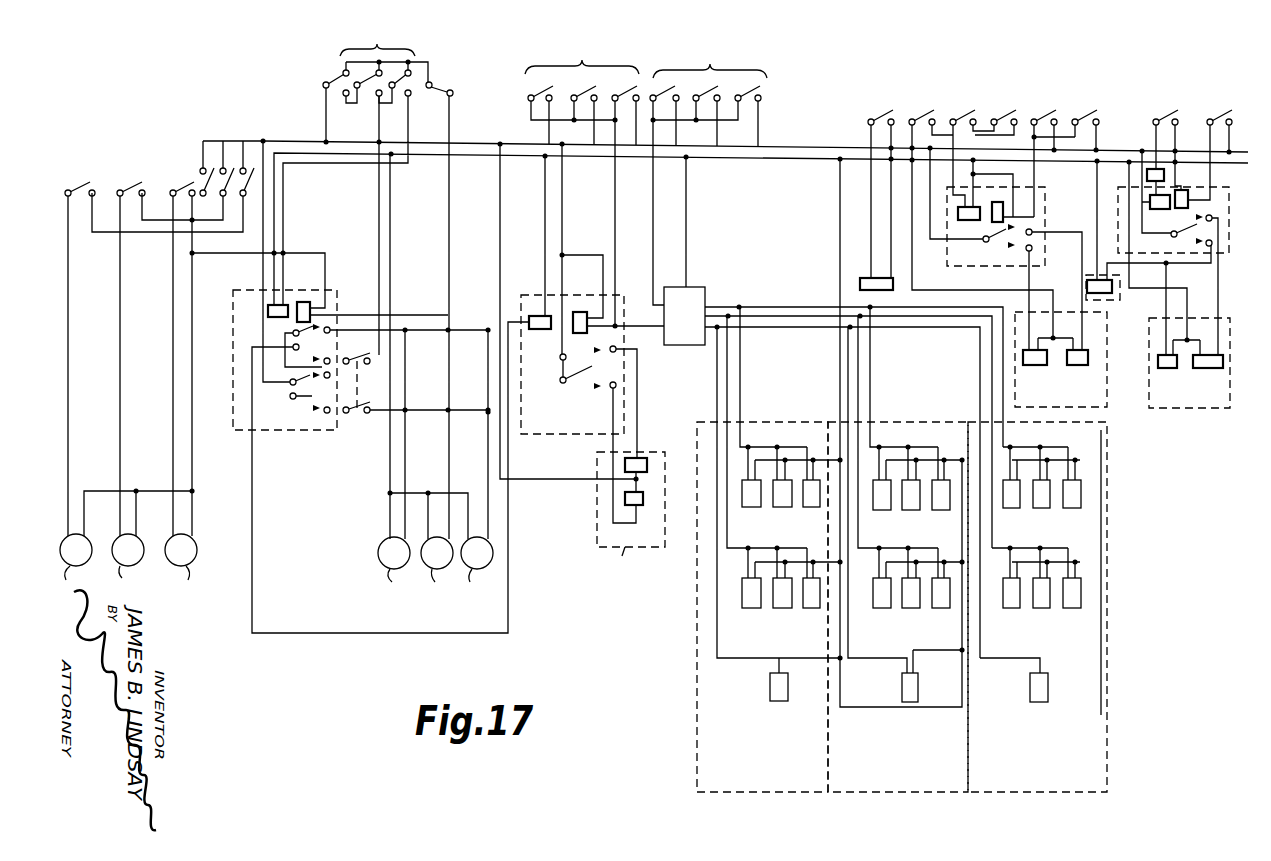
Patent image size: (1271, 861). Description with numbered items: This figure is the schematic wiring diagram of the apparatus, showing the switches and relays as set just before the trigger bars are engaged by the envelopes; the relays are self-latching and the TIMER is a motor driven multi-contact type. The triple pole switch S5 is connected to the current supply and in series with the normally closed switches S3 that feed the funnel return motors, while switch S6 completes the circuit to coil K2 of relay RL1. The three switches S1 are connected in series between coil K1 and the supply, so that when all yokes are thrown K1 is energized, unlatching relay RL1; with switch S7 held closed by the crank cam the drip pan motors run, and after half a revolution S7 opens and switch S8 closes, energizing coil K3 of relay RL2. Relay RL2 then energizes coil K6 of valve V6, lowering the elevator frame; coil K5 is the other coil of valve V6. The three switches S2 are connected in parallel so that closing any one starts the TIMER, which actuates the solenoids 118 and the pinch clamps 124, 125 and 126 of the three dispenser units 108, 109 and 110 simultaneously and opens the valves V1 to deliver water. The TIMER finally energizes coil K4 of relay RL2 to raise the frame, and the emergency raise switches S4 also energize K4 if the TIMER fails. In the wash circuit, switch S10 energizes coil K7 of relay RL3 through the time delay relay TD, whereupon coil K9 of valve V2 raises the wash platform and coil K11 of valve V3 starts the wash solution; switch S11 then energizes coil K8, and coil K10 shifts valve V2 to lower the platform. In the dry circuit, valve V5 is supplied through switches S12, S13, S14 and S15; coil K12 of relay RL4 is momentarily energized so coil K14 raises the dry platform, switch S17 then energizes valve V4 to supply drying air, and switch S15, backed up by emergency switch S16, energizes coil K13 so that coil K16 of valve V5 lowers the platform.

The dispenser unit 108 is at (768, 549).
The dispenser unit 109 is at (898, 549).
The dispenser unit 110 is at (1037, 607).
The solenoids 118 is at (751, 507).
The pinch clamp 124 is at (752, 608).
The pinch clamp 125 is at (783, 608).
The pinch clamp 126 is at (812, 608).
The valve V1 is at (770, 686).
The valve V2 is at (1175, 410).
The valve V3 is at (1118, 302).
The solenoid actuated valve V4 is at (866, 284).
The valve V5 is at (1107, 356).
The valve V6 is at (597, 488).
The coil of relay RL1 K1 is at (268, 310).
The coil of relay RL1 K2 is at (303, 302).
The coil of relay RL2 K3 is at (537, 330).
The coil of relay RL2 K4 is at (580, 312).
The coil of valve V6 K5 is at (639, 458).
The coil of valve V6 K6 is at (643, 498).
The coil of relay RL3 K7 is at (1152, 206).
The coil of relay RL3 K8 is at (1182, 190).
The coil of valve V2 K9 is at (1168, 368).
The coil of valve V2 K10 is at (1205, 368).
The coil of valve V3 K11 is at (1087, 286).
The coil of relay RL4 K12 is at (968, 222).
The coil of relay RL4 K13 is at (1000, 205).
The coil of valve V5 K14 is at (1036, 366).
The coil of valve V5 K16 is at (1078, 366).
The switches S1 is at (375, 90).
The switches S2 is at (708, 172).
The switches S3 is at (130, 338).
The emergency raise switches S4 is at (582, 181).
The triple pole switch S5 is at (173, 170).
The switch S6 is at (446, 78).
The switch S7 is at (356, 413).
The switch S8 is at (372, 362).
The switch S10 is at (1167, 137).
The switch S11 is at (1210, 142).
The switch S12 is at (997, 109).
The switch S13 is at (972, 145).
The switch S14 is at (991, 217).
The switch S15 is at (1086, 117).
The emergency switch S16 is at (1053, 150).
The switch S17 is at (882, 181).
The relay RL1 is at (337, 296).
The relay RL2 is at (572, 364).
The relay RL3 is at (1229, 258).
The relay RL4 is at (1046, 208).
The time delay relay TD is at (1150, 170).
The timer TIMER is at (685, 346).